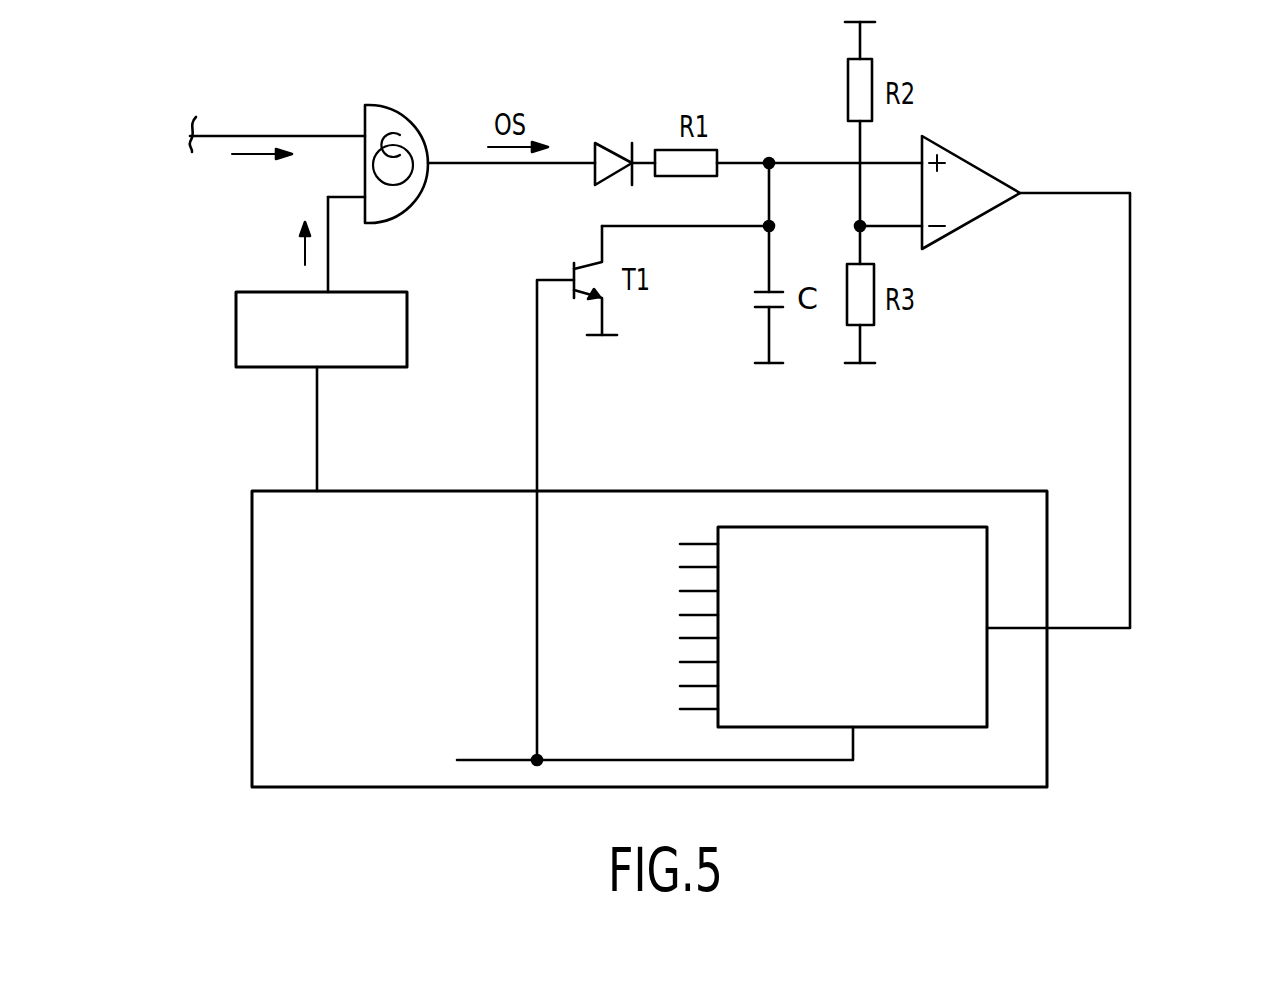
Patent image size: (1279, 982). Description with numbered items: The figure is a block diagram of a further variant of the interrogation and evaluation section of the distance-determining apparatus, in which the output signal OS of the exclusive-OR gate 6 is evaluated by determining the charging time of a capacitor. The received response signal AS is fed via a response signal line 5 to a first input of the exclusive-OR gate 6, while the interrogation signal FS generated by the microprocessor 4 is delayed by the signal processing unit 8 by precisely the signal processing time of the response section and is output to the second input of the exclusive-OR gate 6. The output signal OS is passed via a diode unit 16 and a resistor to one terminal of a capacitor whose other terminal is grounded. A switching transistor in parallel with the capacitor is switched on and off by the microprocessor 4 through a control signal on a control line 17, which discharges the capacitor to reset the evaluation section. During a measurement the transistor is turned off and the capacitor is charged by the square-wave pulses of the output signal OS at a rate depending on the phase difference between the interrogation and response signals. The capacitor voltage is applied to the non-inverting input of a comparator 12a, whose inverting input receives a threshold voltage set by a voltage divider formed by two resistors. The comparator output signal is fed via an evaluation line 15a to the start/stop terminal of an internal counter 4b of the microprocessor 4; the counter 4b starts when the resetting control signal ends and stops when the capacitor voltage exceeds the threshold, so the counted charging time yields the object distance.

The microprocessor 4 is at (414, 512).
The internal counter 4b is at (866, 542).
The response signal line 5 is at (272, 136).
The exclusive-OR gate 6 is at (407, 118).
The signal processing unit 8 is at (236, 327).
The comparator 12a is at (968, 162).
The evaluation line 15a is at (1132, 393).
The diode unit 16 is at (613, 158).
The control line 17 is at (538, 393).